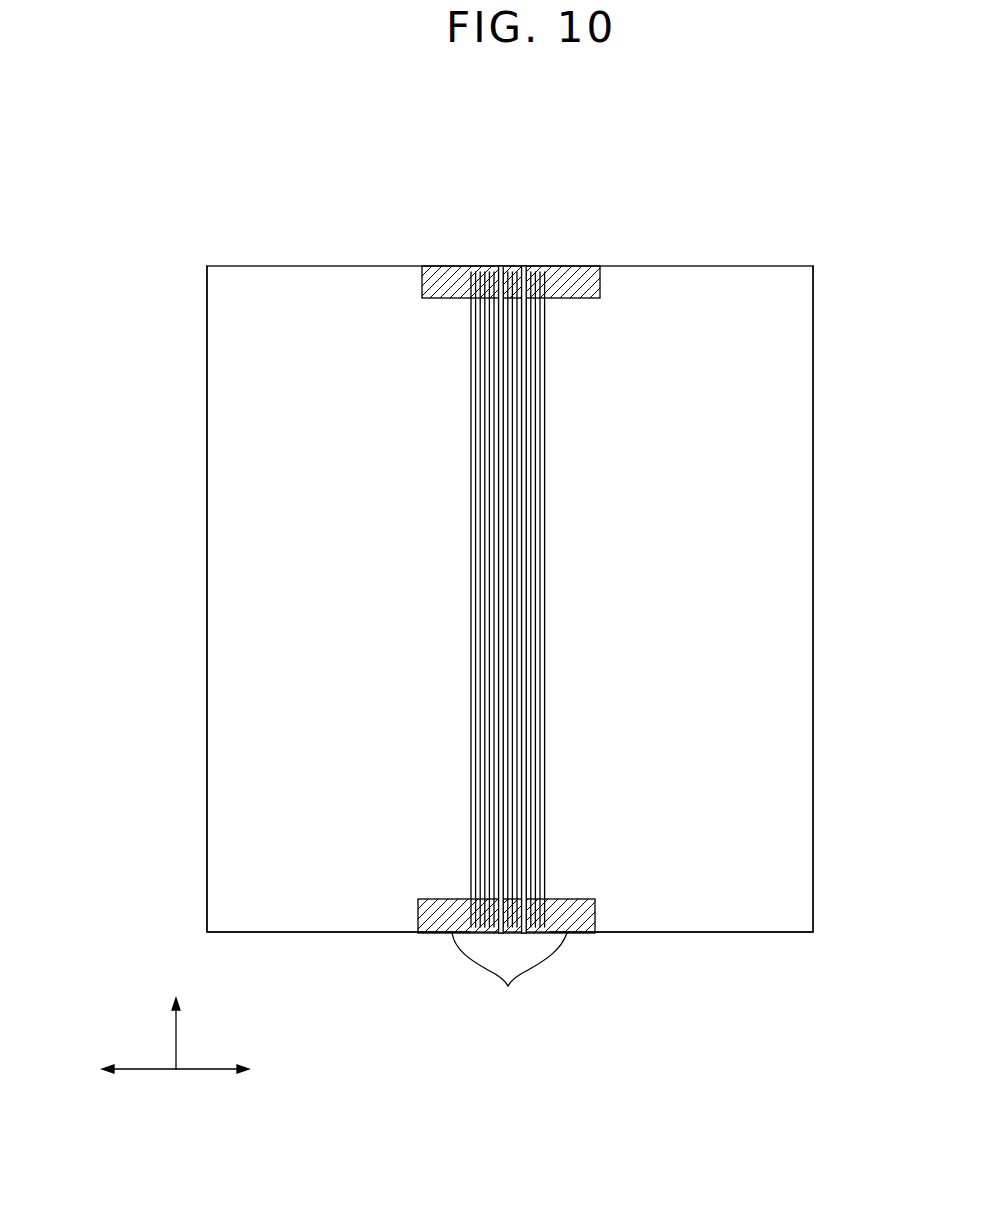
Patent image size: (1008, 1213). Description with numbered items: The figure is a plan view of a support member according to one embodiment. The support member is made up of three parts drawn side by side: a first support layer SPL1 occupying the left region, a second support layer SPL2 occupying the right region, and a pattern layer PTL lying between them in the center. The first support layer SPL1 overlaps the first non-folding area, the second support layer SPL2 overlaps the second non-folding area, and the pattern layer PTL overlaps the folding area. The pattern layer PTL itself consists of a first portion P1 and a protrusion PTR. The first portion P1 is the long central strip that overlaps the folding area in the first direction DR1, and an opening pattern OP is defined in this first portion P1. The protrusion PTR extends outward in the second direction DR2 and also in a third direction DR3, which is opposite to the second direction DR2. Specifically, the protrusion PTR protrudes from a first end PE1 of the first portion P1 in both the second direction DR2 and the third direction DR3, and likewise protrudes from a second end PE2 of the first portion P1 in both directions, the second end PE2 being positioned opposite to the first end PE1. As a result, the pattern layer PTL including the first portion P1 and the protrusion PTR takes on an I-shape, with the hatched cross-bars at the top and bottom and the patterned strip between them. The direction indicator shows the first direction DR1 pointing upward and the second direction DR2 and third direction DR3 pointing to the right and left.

The first support layer SPL1 is at (315, 327).
The second support layer SPL2 is at (672, 328).
The first end PE1 is at (479, 265).
The second end PE2 is at (479, 918).
The first portion P1 is at (497, 265).
The opening pattern OP is at (531, 265).
The protrusion PTR is at (509, 974).
The pattern layer PTL is at (745, 1051).
The first direction DR1 is at (180, 1020).
The second direction DR2 is at (235, 1071).
The third direction DR3 is at (118, 1071).